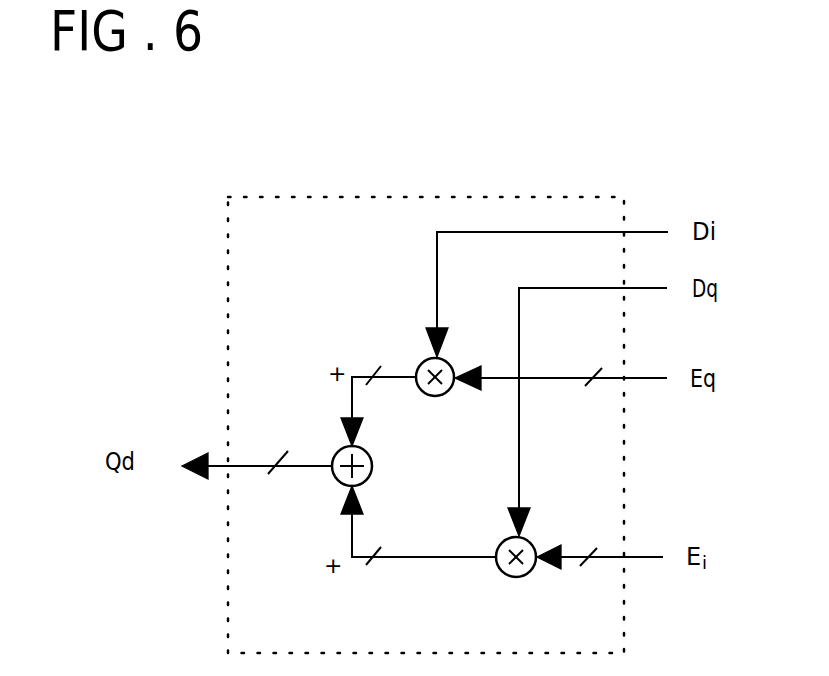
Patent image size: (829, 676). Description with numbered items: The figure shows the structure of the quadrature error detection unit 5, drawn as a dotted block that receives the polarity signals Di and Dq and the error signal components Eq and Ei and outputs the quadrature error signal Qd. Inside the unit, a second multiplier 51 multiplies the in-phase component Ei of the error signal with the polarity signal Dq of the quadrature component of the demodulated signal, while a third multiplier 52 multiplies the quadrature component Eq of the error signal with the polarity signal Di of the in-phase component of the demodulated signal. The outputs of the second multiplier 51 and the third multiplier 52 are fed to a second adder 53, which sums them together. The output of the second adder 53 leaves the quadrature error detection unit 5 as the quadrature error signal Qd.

The quadrature error detection unit 5 is at (276, 197).
The second multiplier 51 is at (418, 364).
The third multiplier 52 is at (537, 540).
The second adder 53 is at (372, 458).